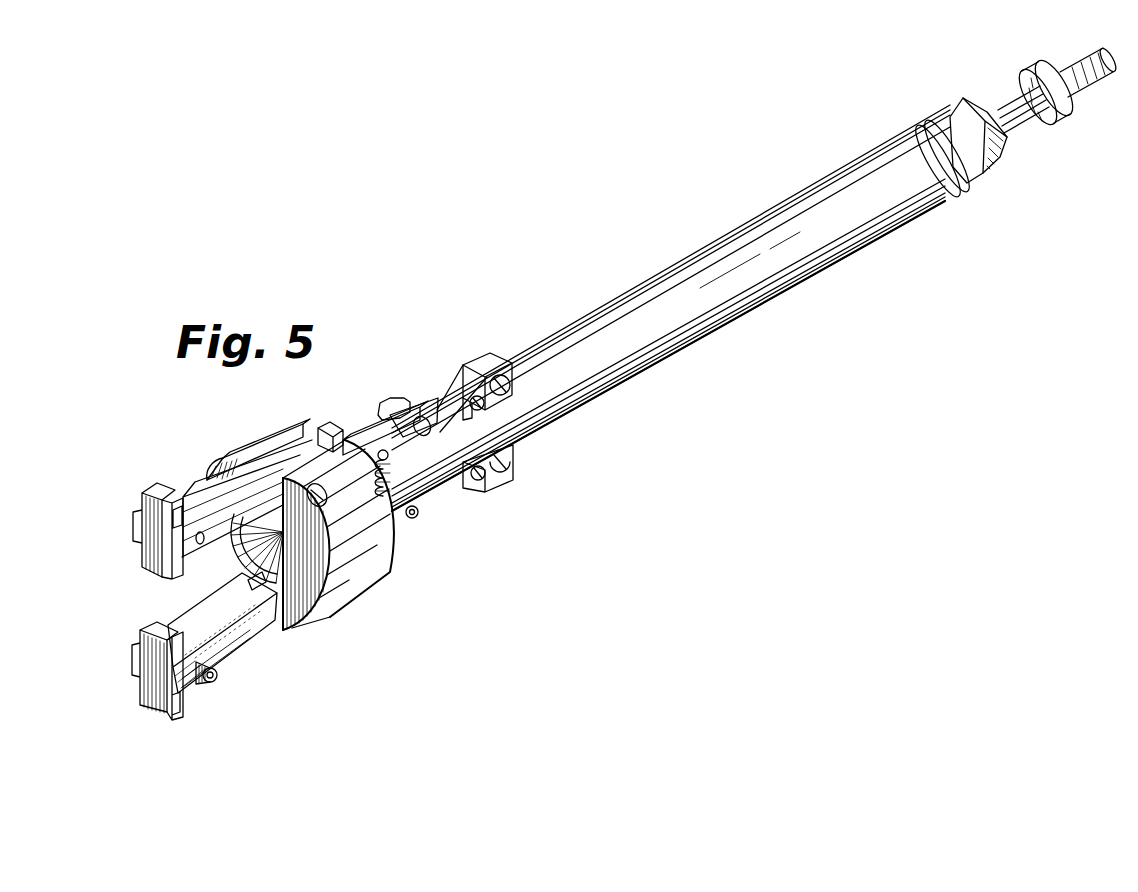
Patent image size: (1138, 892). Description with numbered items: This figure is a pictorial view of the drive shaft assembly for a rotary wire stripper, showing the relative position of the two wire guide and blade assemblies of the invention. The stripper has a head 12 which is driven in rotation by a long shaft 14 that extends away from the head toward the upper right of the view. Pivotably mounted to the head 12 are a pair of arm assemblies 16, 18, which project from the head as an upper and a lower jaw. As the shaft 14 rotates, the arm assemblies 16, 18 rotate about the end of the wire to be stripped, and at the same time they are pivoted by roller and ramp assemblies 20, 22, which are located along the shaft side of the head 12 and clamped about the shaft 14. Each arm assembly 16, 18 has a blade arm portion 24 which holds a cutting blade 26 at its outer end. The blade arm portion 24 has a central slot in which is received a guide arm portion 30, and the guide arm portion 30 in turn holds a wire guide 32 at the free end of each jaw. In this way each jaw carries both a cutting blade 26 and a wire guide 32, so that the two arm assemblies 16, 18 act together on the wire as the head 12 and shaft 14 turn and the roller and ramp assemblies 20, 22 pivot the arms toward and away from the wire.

The head 12 is at (316, 607).
The shaft 14 is at (705, 272).
The arm assembly 16 is at (242, 660).
The arm assembly 18 is at (186, 484).
The roller and ramp assembly 20 is at (406, 393).
The roller and ramp assembly 22 is at (490, 356).
The blade arm portion 24 is at (223, 472).
The cutting blade 26 is at (160, 530).
The guide arm portion 30 is at (283, 456).
The wire guide 32 is at (140, 490).